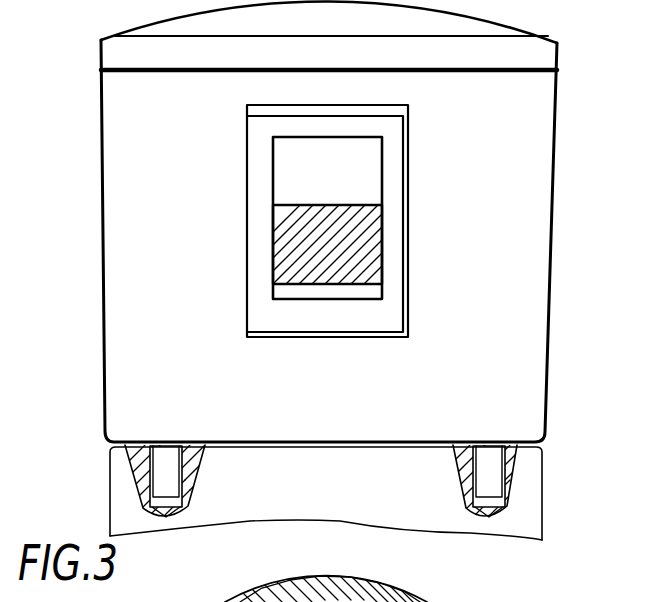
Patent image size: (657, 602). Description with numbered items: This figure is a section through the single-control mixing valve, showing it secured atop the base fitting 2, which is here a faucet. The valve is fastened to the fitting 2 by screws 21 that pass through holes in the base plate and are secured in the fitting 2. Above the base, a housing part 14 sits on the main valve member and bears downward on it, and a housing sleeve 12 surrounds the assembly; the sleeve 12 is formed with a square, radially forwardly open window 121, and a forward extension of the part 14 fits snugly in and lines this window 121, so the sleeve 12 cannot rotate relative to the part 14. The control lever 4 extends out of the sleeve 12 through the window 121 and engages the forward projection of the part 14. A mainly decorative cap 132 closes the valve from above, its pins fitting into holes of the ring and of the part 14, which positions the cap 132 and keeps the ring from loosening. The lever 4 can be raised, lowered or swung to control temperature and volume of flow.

The cap 132 is at (497, 27).
The housing sleeve 12 is at (558, 111).
The housing part 14 is at (397, 208).
The window 121 is at (405, 242).
The control lever 4 is at (307, 202).
The screws 21 is at (497, 475).
The base fitting 2 is at (527, 510).